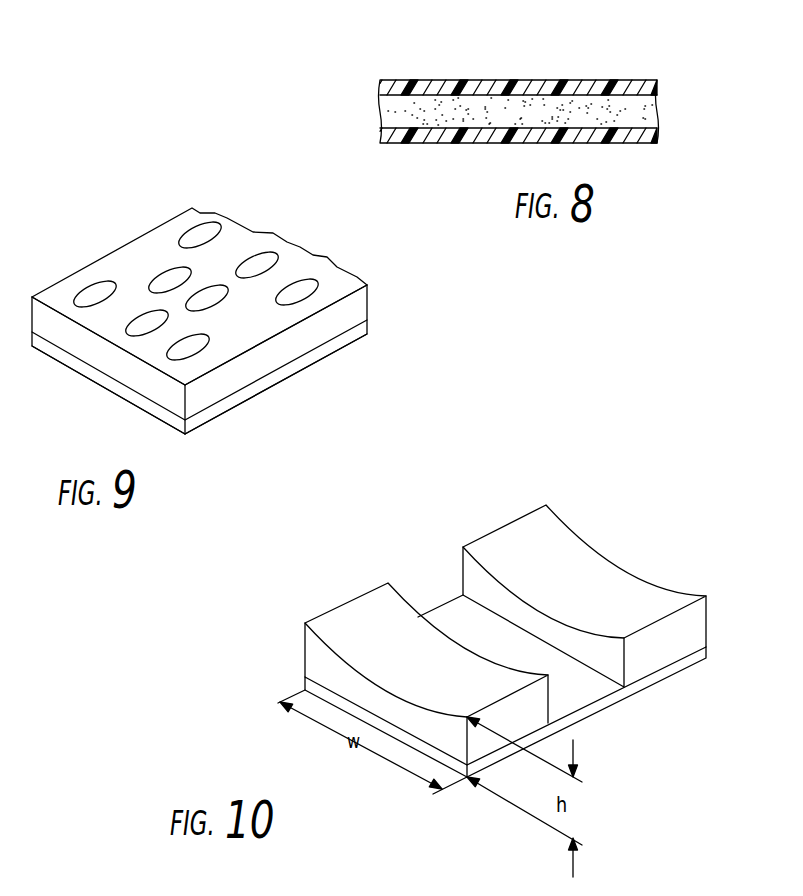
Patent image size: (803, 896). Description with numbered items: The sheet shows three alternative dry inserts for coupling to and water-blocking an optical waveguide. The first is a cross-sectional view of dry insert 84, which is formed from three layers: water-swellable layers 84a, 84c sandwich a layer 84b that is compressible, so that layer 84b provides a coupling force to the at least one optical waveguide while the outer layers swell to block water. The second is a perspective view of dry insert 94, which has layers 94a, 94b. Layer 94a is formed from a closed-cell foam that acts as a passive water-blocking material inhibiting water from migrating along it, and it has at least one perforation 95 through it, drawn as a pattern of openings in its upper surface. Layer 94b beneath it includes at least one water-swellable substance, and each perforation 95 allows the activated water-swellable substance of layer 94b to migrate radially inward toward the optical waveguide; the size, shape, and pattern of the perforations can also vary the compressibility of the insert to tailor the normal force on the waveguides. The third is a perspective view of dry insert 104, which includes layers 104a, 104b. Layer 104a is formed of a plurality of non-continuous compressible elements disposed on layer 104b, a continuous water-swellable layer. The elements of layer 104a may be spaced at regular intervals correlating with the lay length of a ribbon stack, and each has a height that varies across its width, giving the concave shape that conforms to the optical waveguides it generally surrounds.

In FIG. 8, the dry insert 84 is at (370, 108).
In FIG. 8, the water-swellable layer 84a is at (623, 143).
In FIG. 8, the compressible layer 84b is at (647, 112).
In FIG. 8, the water-swellable layer 84c is at (620, 82).
In FIG. 9, the dry insert 94 is at (88, 240).
In FIG. 9, the closed-cell foam layer 94a is at (230, 378).
In FIG. 9, the water-swellable layer 94b is at (200, 427).
In FIG. 9, the perforation 95 is at (213, 290).
In FIG. 10, the dry insert 104 is at (658, 555).
In FIG. 10, the compressible elements layer 104a is at (567, 553).
In FIG. 10, the water-swellable layer 104b is at (577, 692).